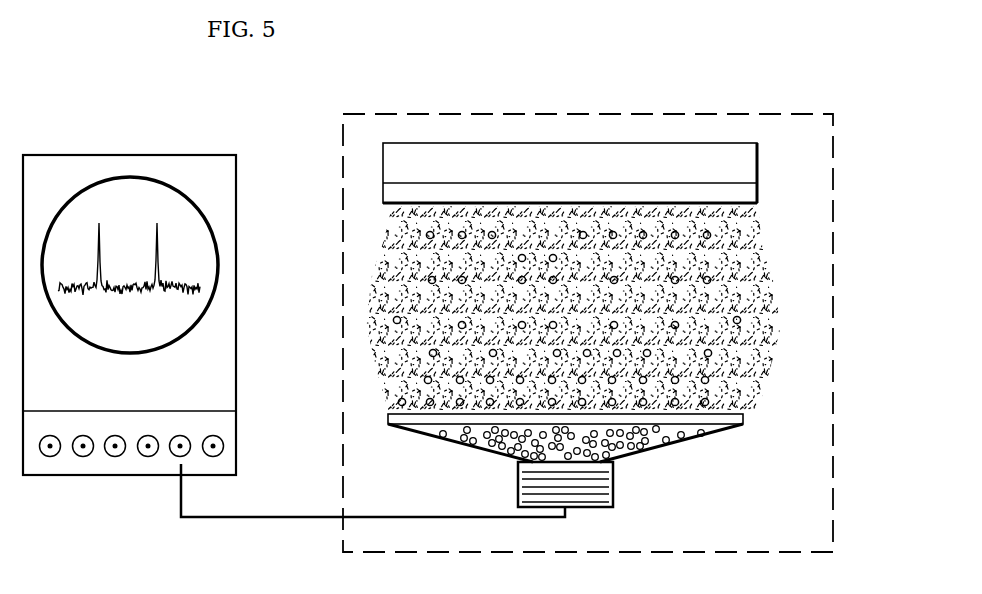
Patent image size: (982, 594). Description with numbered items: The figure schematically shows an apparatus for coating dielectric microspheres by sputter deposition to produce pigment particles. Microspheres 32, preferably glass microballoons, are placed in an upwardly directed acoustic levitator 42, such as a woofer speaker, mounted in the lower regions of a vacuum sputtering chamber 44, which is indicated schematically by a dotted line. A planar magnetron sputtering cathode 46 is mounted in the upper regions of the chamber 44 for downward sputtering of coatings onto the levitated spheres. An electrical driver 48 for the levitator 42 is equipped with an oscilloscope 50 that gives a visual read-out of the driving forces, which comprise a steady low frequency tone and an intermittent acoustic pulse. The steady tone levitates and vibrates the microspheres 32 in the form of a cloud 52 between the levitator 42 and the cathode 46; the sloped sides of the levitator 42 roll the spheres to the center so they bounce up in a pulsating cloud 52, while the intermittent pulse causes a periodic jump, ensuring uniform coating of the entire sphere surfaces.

The microspheres 32 is at (709, 379).
The acoustic levitator 42 is at (655, 459).
The vacuum sputtering chamber 44 is at (615, 333).
The planar magnetron sputtering cathode 46 is at (762, 150).
The electrical driver 48 is at (43, 460).
The oscilloscope 50 is at (215, 203).
The cloud 52 is at (733, 291).